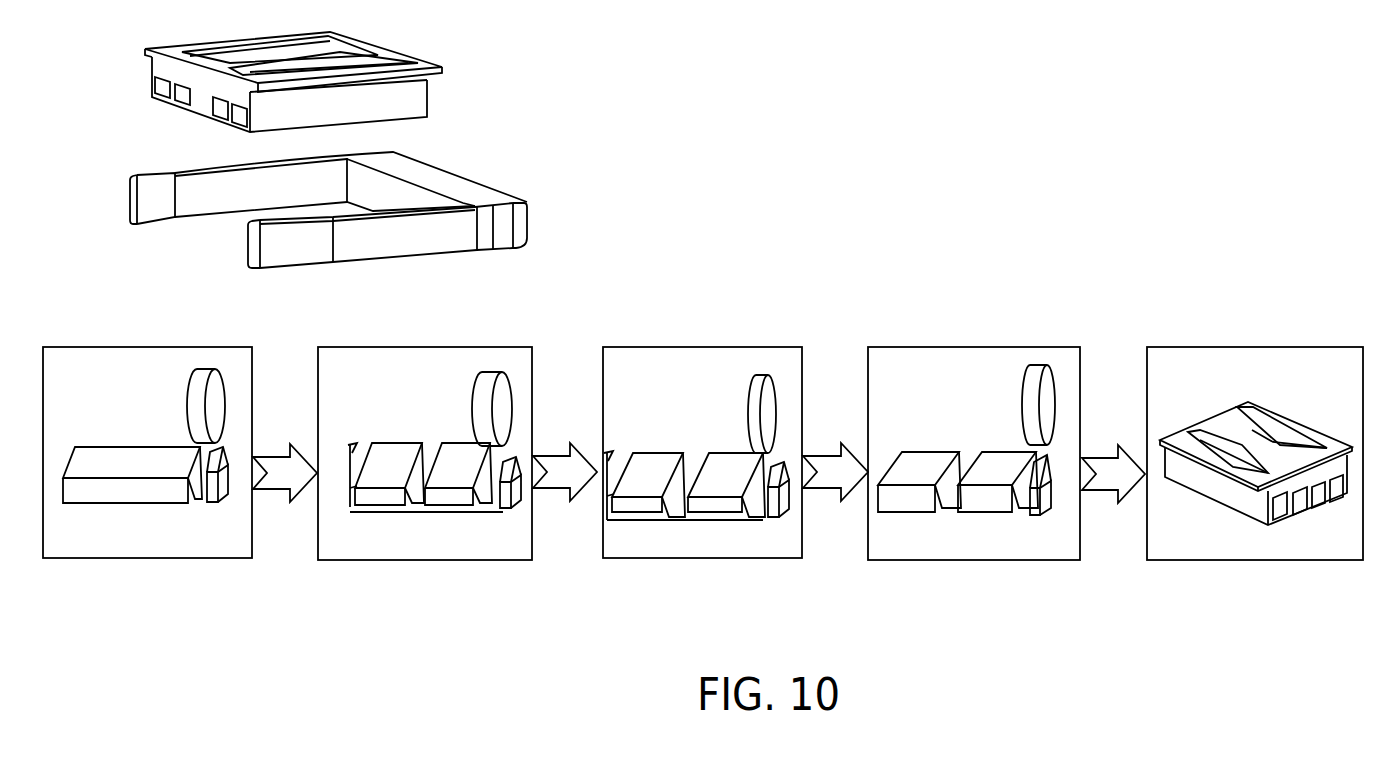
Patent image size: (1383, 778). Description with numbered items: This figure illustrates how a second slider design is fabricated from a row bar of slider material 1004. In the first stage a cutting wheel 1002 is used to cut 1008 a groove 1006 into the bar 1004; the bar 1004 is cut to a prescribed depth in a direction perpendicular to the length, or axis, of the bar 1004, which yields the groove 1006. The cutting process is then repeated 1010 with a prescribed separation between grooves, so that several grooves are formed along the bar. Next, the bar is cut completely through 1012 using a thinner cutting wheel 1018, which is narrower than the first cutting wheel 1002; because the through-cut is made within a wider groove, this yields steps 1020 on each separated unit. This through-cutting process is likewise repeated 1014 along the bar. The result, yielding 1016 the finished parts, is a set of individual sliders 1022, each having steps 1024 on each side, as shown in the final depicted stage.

The cutting wheel 1002 is at (198, 388).
The row bar of slider material 1004 is at (75, 490).
The groove 1006 is at (198, 493).
The cutting step 1008 is at (153, 532).
The repeated grooving step 1010 is at (418, 528).
The cut-through step 1012 is at (648, 530).
The repeated cut-through step 1014 is at (968, 532).
The yielding step 1016 is at (1253, 540).
The thinner cutting wheel 1018 is at (768, 400).
The steps 1020 is at (760, 517).
The individual slider 1022 is at (1253, 438).
The steps 1024 is at (1252, 497).